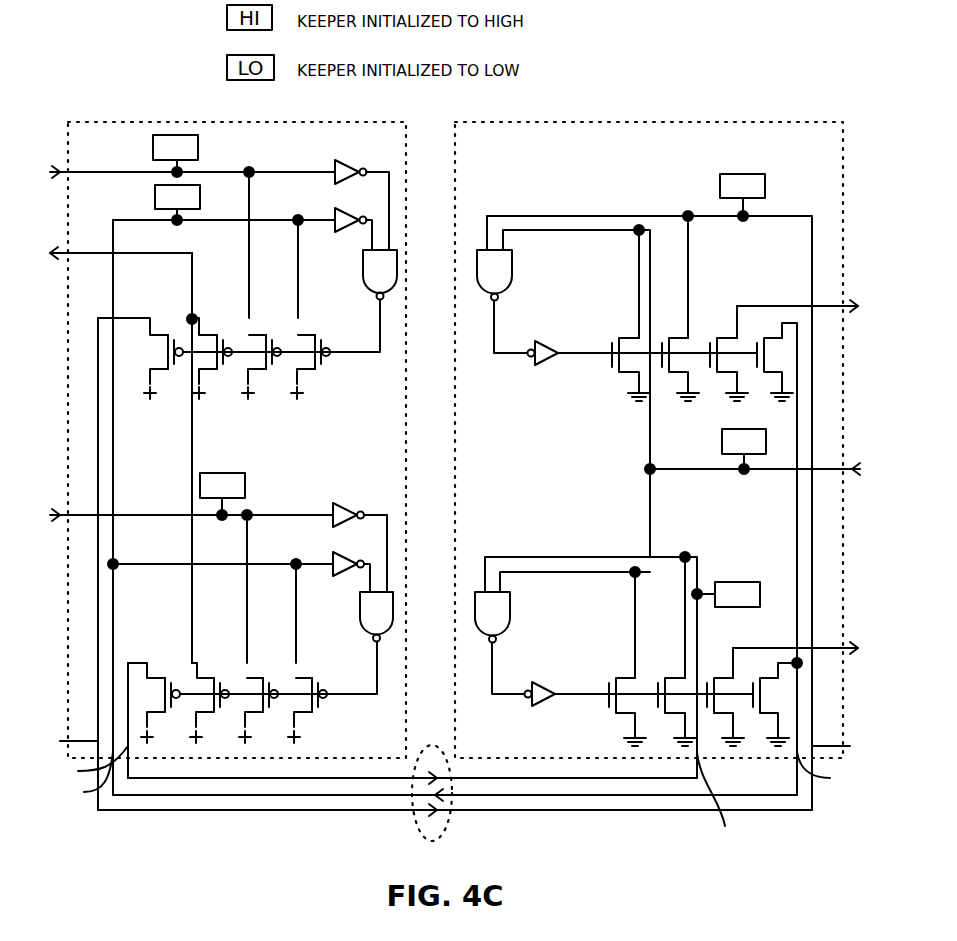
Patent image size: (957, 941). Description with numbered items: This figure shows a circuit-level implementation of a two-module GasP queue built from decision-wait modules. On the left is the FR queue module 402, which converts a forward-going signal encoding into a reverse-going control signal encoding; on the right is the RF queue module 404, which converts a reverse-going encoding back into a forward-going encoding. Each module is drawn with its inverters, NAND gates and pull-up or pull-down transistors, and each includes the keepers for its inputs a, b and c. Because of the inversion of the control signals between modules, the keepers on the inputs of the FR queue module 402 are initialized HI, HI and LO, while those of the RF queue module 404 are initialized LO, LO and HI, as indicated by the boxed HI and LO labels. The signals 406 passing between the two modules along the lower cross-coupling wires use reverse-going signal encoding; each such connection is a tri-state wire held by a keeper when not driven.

The FR decision-wait module 402 is at (217, 466).
The RF decision-wait module 404 is at (671, 466).
The signals 406 is at (433, 841).